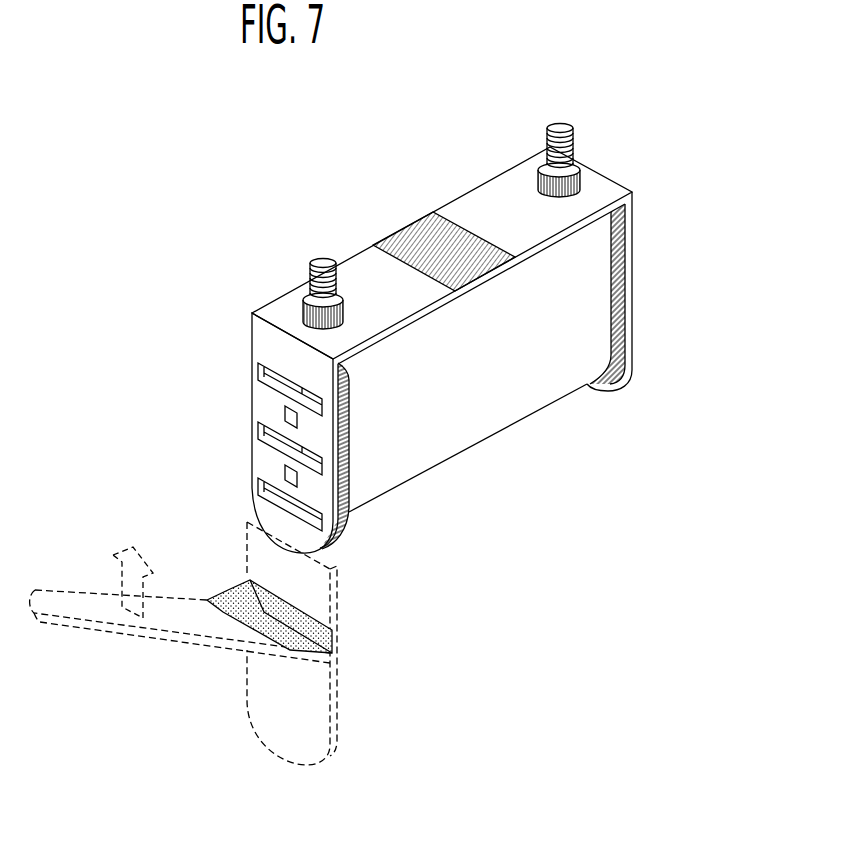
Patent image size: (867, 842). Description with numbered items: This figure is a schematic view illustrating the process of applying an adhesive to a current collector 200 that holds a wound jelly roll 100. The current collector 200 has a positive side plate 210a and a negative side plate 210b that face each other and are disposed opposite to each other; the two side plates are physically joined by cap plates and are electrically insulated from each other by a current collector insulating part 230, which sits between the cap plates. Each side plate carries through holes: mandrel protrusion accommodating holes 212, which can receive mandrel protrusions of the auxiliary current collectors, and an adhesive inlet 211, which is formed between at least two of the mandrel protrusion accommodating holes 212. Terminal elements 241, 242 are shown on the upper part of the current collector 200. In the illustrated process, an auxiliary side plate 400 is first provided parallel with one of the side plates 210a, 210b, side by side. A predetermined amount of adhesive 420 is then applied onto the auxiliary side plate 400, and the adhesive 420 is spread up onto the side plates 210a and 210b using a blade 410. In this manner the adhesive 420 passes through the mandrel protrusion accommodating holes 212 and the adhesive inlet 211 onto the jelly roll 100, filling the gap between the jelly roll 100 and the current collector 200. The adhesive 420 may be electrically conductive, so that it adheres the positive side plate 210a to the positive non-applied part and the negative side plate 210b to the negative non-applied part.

The wound jelly roll 100 is at (487, 454).
The current collector 200 is at (169, 251).
The positive side plate 210a is at (250, 365).
The negative side plate 210b is at (635, 222).
The adhesive inlet 211 is at (282, 443).
The mandrel protrusion accommodating hole 212 is at (297, 481).
The current collector insulating part 230 is at (410, 236).
The first terminal 241 is at (320, 265).
The second terminal 242 is at (560, 129).
The auxiliary side plate 400 is at (320, 693).
The blade 410 is at (165, 657).
The adhesive 420 is at (230, 585).